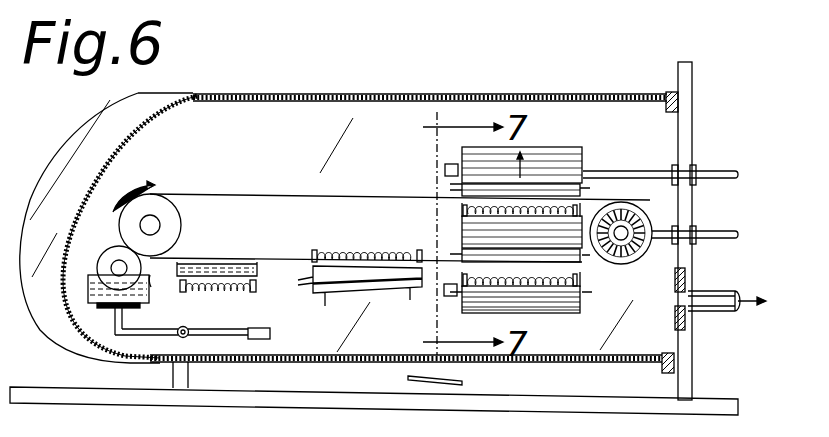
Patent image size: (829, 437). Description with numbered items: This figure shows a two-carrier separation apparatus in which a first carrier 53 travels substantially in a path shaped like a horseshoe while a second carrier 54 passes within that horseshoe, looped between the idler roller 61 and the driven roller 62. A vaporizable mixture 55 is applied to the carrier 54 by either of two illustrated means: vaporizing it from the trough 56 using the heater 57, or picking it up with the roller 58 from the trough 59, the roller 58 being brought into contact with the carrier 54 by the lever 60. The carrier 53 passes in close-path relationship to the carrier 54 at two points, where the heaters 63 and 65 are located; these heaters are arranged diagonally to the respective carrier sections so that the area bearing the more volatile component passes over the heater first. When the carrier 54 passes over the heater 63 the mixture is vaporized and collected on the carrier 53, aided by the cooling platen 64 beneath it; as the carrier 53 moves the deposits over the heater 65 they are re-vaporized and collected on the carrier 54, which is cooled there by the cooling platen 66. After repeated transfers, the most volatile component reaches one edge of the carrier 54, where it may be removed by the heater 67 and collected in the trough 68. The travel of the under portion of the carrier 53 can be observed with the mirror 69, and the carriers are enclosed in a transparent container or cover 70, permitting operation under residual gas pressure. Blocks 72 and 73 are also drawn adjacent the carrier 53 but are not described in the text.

The carrier 53 is at (542, 148).
The carrier 54 is at (268, 194).
The vaporizable mixture 55 is at (147, 298).
The trough 56 is at (177, 266).
The heater 57 is at (220, 293).
The roller 58 is at (100, 266).
The trough 59 is at (152, 281).
The lever 60 is at (227, 330).
The idler roller 61 is at (125, 231).
The driven roller 62 is at (635, 222).
The heater 63 is at (515, 212).
The cooling platen 64 is at (557, 190).
The heater 65 is at (513, 285).
The cooling platen 66 is at (568, 250).
The heater 67 is at (345, 254).
The trough 68 is at (312, 271).
The mirror 69 is at (408, 378).
The container or cover 70 is at (160, 100).
The stop block 72 is at (444, 165).
The stop block 73 is at (440, 298).